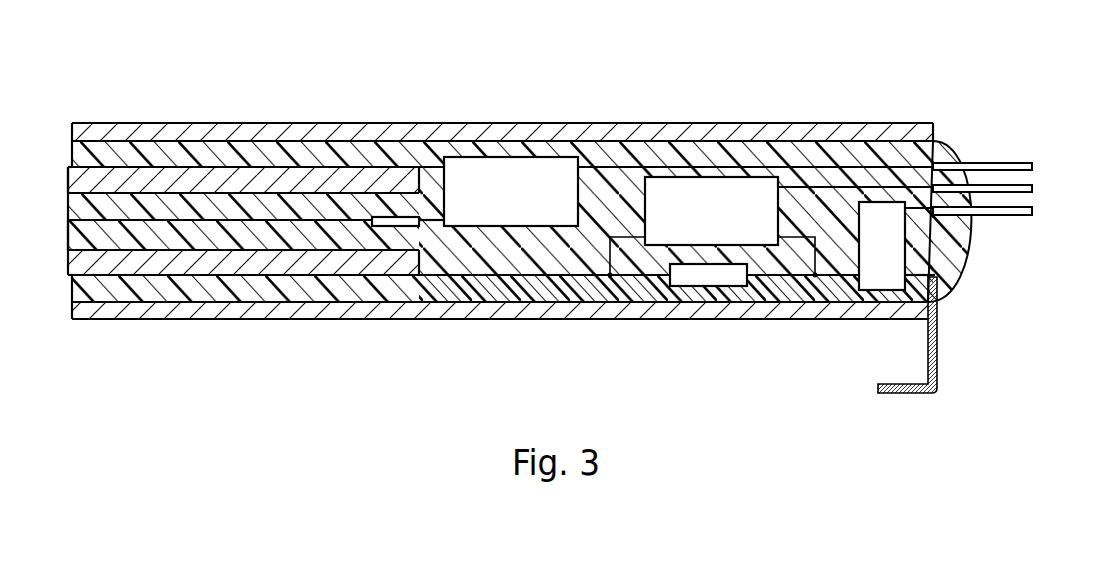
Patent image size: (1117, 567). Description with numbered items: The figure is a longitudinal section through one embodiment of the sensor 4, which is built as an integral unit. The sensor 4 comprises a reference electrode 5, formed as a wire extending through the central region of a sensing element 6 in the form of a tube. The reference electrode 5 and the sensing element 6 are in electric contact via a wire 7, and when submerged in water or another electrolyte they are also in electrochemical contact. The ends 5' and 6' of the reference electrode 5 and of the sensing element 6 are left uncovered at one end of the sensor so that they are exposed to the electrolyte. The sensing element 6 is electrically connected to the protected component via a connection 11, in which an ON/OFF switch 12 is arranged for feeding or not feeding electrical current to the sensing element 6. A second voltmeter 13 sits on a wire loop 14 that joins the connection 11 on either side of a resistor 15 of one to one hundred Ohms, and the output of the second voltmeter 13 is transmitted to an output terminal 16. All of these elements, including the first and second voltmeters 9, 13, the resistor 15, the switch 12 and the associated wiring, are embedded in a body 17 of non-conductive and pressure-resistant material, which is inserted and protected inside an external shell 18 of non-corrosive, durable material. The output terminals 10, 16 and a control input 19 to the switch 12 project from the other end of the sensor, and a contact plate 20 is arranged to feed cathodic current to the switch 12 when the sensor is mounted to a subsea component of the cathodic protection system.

The sensor 4 is at (879, 77).
The reference electrode 5 is at (256, 304).
The end of reference electrode 5' is at (88, 256).
The sensing element 6 is at (243, 125).
The end of sensing element 6' is at (89, 151).
The wire 7 is at (433, 170).
The first voltmeter 9 is at (502, 180).
The output terminal 10 is at (1033, 164).
The connection 11 is at (838, 277).
The ON/OFF switch 12 is at (883, 273).
The second voltmeter 13 is at (708, 190).
The wire loop 14 is at (608, 276).
The resistor 15 is at (708, 278).
The output terminal 16 is at (1033, 188).
The body 17 is at (203, 207).
The external shell 18 is at (933, 123).
The control input 19 is at (1033, 210).
The contact plate 20 is at (937, 340).